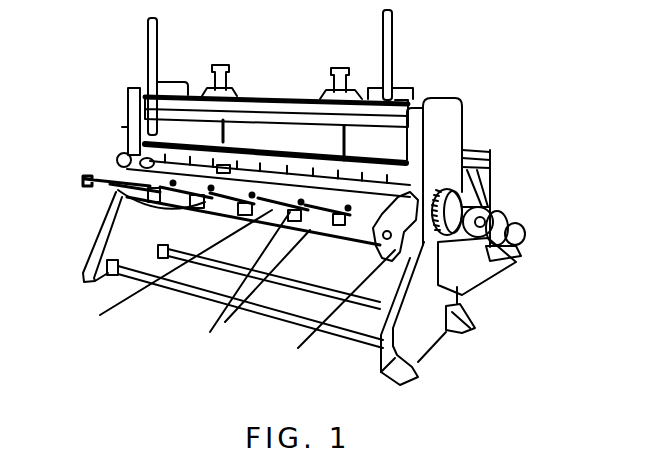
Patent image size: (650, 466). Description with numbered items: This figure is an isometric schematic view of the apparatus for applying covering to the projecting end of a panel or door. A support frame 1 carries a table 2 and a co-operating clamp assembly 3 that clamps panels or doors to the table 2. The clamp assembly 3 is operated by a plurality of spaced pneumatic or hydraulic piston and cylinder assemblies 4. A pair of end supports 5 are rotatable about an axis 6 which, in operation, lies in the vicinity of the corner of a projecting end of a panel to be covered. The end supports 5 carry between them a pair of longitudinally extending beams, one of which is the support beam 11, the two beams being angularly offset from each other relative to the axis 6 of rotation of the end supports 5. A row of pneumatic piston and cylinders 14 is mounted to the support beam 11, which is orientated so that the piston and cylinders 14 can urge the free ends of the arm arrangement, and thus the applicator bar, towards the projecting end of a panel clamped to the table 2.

The support frame 1 is at (498, 102).
The table 2 is at (390, 152).
The clamp assembly 3 is at (289, 160).
The piston and cylinder assemblies 4 is at (236, 123).
The end supports 5 is at (380, 250).
The axis 6 is at (448, 205).
The support beam 11 is at (250, 308).
The pneumatic piston and cylinders 14 is at (140, 206).